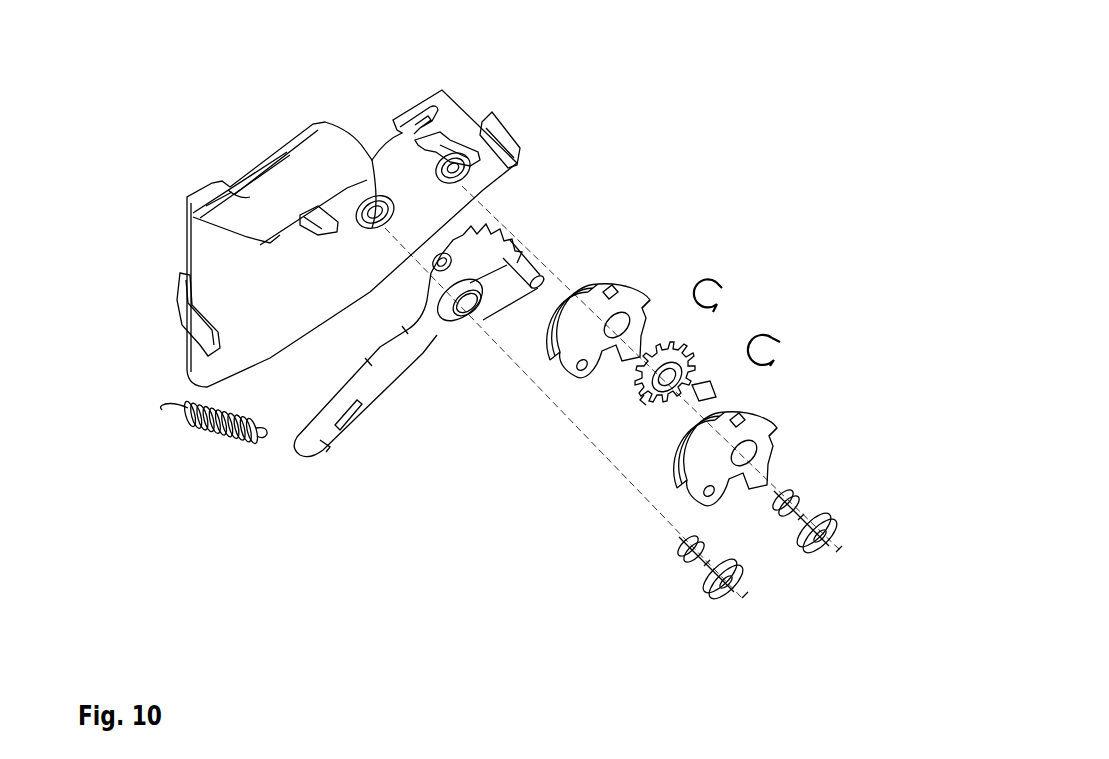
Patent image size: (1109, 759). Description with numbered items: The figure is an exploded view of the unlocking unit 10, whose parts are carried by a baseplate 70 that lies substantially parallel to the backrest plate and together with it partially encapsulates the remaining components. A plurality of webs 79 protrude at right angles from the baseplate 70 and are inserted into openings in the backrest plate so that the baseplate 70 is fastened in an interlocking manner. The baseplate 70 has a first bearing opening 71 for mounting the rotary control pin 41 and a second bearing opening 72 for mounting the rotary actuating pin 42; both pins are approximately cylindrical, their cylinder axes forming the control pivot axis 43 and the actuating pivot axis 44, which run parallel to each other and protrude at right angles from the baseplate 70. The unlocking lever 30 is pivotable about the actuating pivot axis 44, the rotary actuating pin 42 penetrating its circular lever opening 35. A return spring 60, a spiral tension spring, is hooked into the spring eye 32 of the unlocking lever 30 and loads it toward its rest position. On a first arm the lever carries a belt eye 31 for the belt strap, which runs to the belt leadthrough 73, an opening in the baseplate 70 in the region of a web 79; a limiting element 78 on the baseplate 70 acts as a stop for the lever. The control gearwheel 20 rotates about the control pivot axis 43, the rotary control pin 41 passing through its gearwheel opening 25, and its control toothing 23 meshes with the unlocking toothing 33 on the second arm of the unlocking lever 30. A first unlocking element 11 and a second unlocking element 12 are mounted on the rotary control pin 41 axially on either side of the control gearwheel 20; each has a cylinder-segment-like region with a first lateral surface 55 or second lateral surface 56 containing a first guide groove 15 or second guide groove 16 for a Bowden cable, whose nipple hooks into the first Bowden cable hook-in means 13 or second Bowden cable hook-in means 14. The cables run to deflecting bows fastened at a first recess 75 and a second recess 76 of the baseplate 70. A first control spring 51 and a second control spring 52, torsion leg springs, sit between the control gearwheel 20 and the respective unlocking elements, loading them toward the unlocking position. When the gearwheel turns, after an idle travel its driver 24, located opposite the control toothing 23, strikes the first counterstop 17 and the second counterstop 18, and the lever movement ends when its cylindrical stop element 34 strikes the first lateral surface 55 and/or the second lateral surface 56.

The unlocking unit 10 is at (160, 173).
The first unlocking element 11 is at (760, 420).
The second unlocking element 12 is at (633, 283).
The first Bowden cable hook-in means 13 is at (711, 496).
The second Bowden cable hook-in means 14 is at (580, 364).
The first guide groove 15 is at (690, 487).
The second guide groove 16 is at (566, 367).
The first counterstop 17 is at (772, 432).
The second counterstop 18 is at (643, 303).
The control gearwheel 20 is at (693, 337).
The control toothing 23 is at (630, 397).
The driver 24 is at (702, 378).
The gearwheel opening 25 is at (665, 386).
The unlocking lever 30 is at (340, 450).
The belt eye 31 is at (345, 417).
The spring eye 32 is at (430, 262).
The unlocking toothing 33 is at (500, 238).
The stop element 34 is at (530, 267).
The lever opening 35 is at (455, 310).
The rotary control pin 41 is at (795, 502).
The rotary actuating pin 42 is at (695, 566).
The control pivot axis 43 is at (836, 550).
The actuating pivot axis 44 is at (740, 597).
The first control spring 51 is at (780, 334).
The second control spring 52 is at (722, 285).
The first lateral surface 55 is at (680, 470).
The second lateral surface 56 is at (563, 332).
The return spring 60 is at (228, 428).
The baseplate 70 is at (225, 270).
The first bearing opening 71 is at (465, 160).
The second bearing opening 72 is at (375, 212).
The belt leadthrough 73 is at (265, 168).
The first recess 75 is at (440, 148).
The second recess 76 is at (427, 127).
The limiting element 78 is at (317, 218).
The webs 79 is at (222, 203).